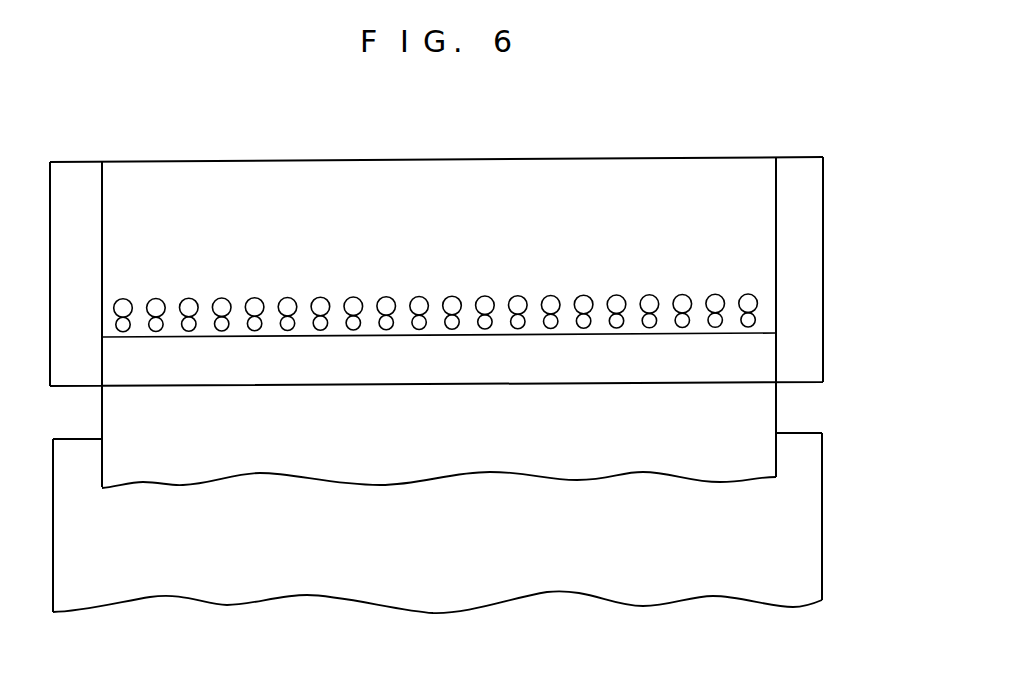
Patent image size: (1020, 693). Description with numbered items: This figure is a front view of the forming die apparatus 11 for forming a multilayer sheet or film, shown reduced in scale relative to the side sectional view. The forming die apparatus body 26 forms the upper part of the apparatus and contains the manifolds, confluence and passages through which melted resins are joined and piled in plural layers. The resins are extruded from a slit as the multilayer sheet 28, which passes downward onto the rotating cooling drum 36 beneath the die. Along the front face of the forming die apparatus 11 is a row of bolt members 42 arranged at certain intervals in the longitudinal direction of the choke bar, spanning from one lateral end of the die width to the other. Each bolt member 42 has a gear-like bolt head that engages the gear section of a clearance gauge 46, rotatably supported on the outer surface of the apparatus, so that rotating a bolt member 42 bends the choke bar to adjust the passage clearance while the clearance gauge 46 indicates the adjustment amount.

The forming die apparatus 11 is at (690, 146).
The forming die apparatus body 26 is at (434, 177).
The multilayer sheet 28 is at (762, 413).
The rotating cooling drum 36 is at (792, 517).
The bolt members 42 is at (125, 329).
The clearance gauge 46 is at (189, 300).